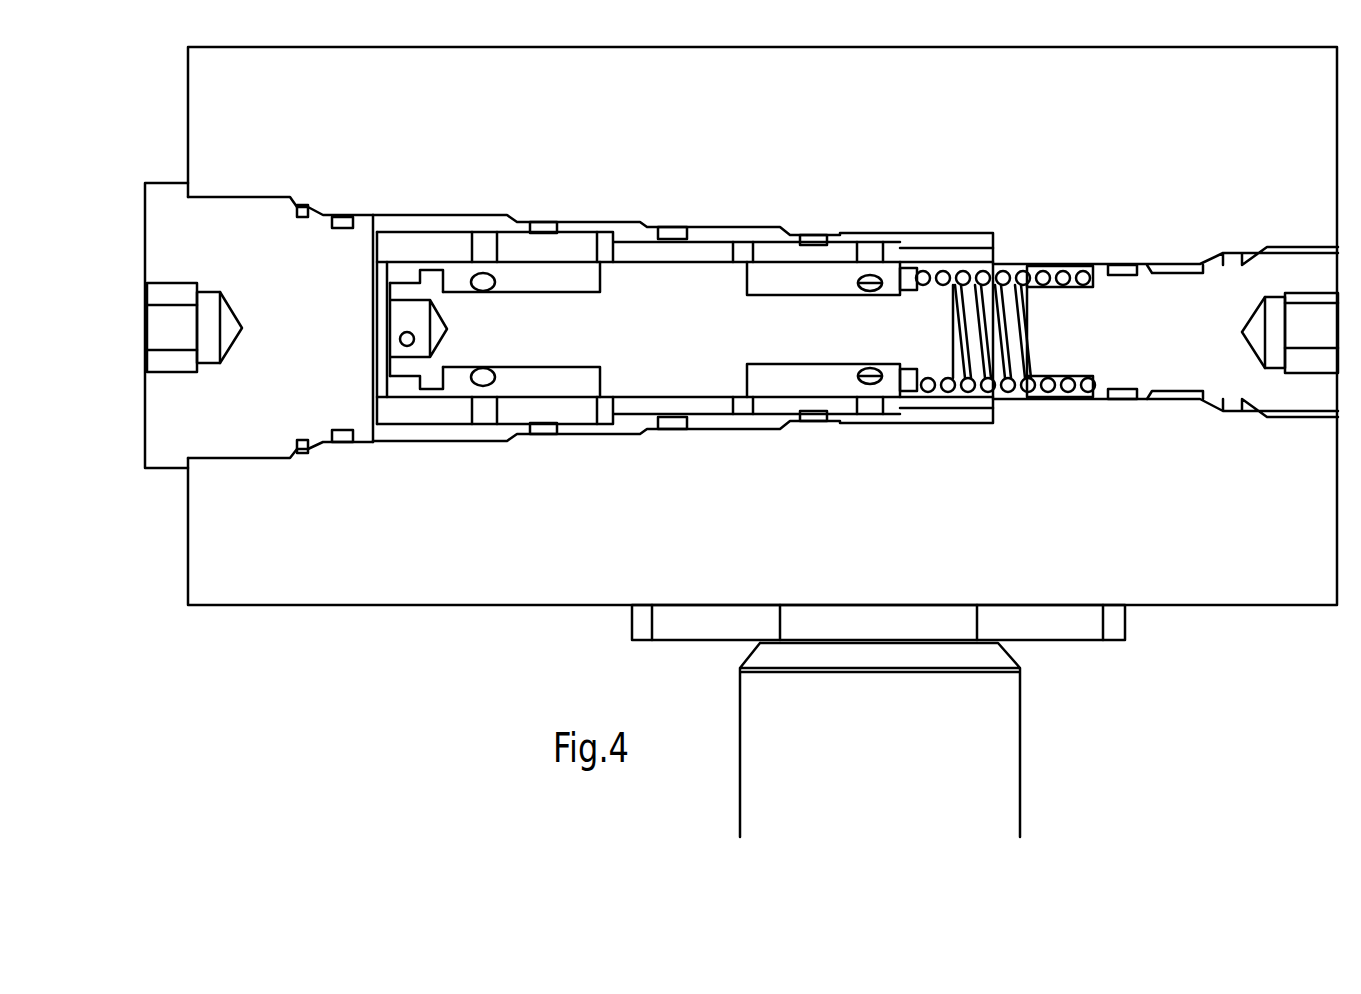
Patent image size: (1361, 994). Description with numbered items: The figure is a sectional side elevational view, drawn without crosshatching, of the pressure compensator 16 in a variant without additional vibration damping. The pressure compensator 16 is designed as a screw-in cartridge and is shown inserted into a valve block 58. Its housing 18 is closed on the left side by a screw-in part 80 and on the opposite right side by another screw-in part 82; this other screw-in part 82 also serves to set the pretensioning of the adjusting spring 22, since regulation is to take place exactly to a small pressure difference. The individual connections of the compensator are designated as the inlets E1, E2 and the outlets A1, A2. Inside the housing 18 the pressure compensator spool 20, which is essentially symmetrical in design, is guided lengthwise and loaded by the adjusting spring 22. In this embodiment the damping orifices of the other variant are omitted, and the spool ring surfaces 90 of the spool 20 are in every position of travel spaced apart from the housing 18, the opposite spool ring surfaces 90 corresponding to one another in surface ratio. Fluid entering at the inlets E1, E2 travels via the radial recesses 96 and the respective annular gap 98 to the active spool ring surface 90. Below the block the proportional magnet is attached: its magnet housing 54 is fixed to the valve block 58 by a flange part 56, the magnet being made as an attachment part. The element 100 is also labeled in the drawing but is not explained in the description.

The pressure compensator 16 is at (677, 215).
The pressure compensator housing 18 is at (455, 111).
The pressure compensator spool 20 is at (690, 336).
The adjusting spring 22 is at (1018, 270).
The magnet housing 54 is at (1018, 752).
The flange part 56 is at (1073, 625).
The valve block 58 is at (1250, 573).
The screw-in part 80 is at (258, 252).
The other screw-in part 82 is at (1162, 303).
The spool ring surfaces 90 is at (423, 278).
The radial recesses 96 is at (550, 387).
The annular gap 98 is at (432, 392).
The radial bore 100 is at (447, 280).
The connection A1 is at (745, 260).
The connection A2 is at (600, 233).
The inlet side E1 is at (870, 403).
The inlet side E2 is at (481, 413).